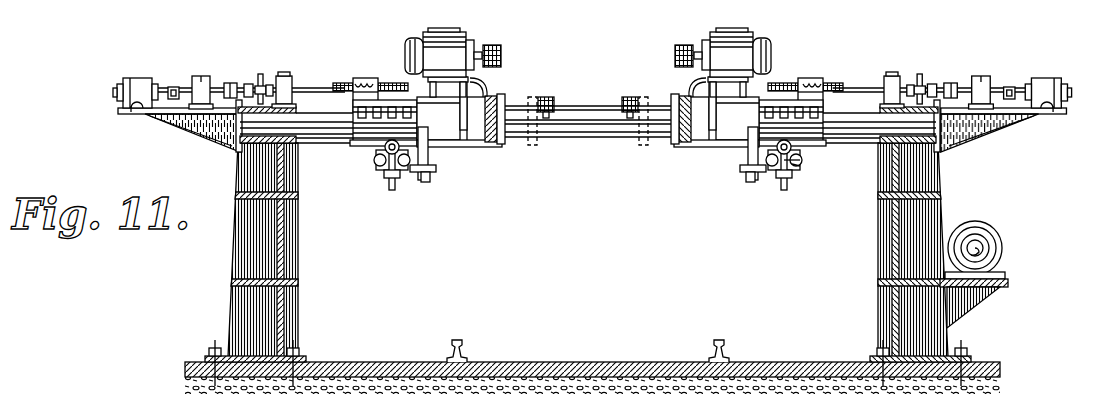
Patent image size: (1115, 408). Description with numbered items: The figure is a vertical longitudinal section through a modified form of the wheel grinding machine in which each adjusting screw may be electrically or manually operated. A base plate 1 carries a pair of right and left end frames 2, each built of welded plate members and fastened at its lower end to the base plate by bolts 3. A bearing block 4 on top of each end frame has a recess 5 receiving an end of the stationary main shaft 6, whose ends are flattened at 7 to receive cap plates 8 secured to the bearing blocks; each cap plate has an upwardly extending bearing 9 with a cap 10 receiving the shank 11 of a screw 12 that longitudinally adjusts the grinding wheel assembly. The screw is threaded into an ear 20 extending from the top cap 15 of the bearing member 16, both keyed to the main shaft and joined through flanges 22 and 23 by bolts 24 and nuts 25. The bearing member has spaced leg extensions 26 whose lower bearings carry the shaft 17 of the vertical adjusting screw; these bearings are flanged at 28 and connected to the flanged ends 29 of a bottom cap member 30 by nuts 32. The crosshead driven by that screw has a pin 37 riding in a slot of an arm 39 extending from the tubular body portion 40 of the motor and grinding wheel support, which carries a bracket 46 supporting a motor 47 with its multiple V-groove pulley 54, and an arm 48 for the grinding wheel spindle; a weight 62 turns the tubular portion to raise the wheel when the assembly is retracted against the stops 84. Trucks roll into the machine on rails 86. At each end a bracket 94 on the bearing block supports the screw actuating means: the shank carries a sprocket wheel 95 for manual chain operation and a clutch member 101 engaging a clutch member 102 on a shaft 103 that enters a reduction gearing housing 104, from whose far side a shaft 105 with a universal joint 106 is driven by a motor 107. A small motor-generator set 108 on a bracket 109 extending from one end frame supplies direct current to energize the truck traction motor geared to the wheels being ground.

The base plate 1 is at (592, 362).
The end frames 2 is at (268, 253).
The bolts 3 is at (288, 345).
The bearing block 4 is at (236, 140).
The recess 5 is at (246, 150).
The main shaft 6 is at (588, 137).
The flattened surface 7 is at (216, 135).
The cap plates 8 is at (196, 130).
The bearing 9 is at (293, 100).
The cap 10 is at (290, 100).
The shank 11 is at (318, 88).
The screw 12 is at (338, 84).
The cap 15 is at (382, 92).
The bearing member 16 is at (358, 132).
The shaft 17 is at (376, 162).
The ear 20 is at (365, 78).
The flange 22 is at (340, 109).
The flange 23 is at (433, 142).
The bolts 24 is at (445, 101).
The nuts 25 is at (353, 144).
The leg extensions 26 is at (428, 162).
The flange 28 is at (802, 160).
The flanged ends 29 is at (800, 168).
The bottom cap member 30 is at (393, 190).
The nuts 32 is at (385, 174).
The pin 37 is at (437, 170).
The arm 39 is at (426, 182).
The tubular body portion 40 is at (497, 148).
The bracket 46 is at (467, 99).
The motor 47 is at (448, 34).
The arm 48 is at (503, 140).
The multiple V-groove pulley 54 is at (498, 47).
The weight 62 is at (492, 86).
The stops 84 is at (620, 104).
The rails 86 is at (467, 343).
The bracket 94 is at (168, 115).
The sprocket wheel 95 is at (263, 80).
The clutch member 101 is at (243, 88).
The clutch member 102 is at (247, 83).
The shaft 103 is at (228, 82).
The housing 104 is at (200, 76).
The shaft 105 is at (158, 88).
The universal joint 106 is at (172, 87).
The motor 107 is at (125, 100).
The motor-generator set 108 is at (990, 232).
The bracket 109 is at (1000, 288).